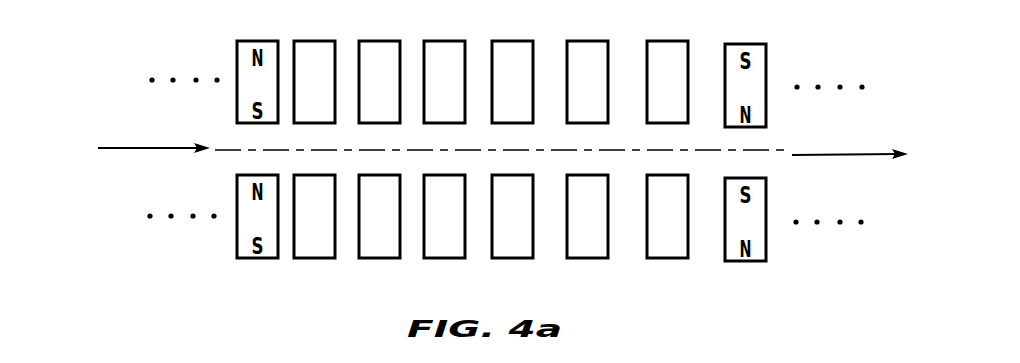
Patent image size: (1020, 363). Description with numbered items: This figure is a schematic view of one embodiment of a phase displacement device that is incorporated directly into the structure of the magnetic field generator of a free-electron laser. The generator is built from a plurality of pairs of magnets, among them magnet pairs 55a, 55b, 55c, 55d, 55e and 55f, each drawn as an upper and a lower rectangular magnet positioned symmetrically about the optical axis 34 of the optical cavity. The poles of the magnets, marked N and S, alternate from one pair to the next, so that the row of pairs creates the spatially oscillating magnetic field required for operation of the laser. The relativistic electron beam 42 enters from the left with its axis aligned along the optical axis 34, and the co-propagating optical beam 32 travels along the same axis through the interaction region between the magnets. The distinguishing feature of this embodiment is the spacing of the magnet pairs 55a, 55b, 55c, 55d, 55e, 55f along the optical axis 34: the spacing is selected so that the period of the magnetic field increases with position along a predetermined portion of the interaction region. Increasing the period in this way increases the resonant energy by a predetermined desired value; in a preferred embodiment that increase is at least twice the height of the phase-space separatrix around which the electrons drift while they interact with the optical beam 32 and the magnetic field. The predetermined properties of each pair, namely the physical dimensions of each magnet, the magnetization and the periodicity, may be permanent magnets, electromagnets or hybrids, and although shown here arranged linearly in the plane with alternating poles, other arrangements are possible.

The relativistic electron beam 42 is at (155, 150).
The co-propagating optical beam 32 is at (228, 150).
The optical axis 34 is at (805, 157).
The magnet pair 55a is at (309, 175).
The magnet pair 55b is at (374, 175).
The magnet pair 55c is at (439, 175).
The magnet pair 55d is at (507, 175).
The magnet pair 55e is at (582, 175).
The magnet pair 55f is at (663, 175).